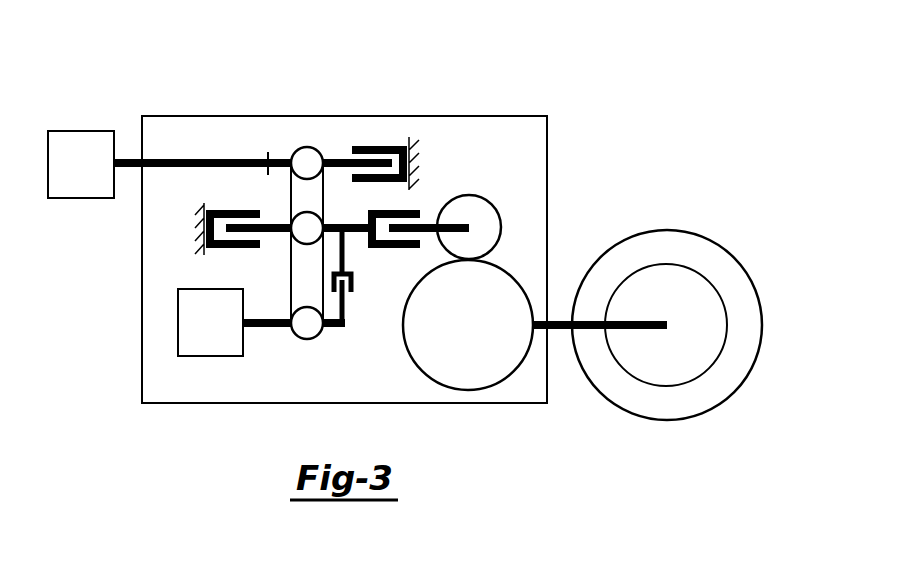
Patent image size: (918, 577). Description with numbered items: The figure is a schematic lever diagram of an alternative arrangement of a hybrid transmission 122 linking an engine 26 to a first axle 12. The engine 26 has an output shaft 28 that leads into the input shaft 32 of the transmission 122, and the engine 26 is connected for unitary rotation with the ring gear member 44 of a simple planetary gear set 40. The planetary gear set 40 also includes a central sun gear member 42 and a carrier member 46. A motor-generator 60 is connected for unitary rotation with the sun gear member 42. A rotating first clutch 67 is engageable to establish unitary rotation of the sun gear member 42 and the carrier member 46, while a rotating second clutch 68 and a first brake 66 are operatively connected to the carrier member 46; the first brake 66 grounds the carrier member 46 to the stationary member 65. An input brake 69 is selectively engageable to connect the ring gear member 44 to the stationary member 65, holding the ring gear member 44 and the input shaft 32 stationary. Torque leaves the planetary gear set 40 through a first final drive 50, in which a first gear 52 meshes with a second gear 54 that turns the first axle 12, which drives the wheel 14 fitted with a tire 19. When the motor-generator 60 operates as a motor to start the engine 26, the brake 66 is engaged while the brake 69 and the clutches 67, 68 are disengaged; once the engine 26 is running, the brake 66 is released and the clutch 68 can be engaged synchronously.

The first axle 12 is at (561, 320).
The wheel 14 is at (665, 263).
The tire 19 is at (762, 325).
The engine 26 is at (89, 180).
The output shaft 28 is at (228, 159).
The input shaft 32 is at (270, 152).
The planetary gear set 40 is at (291, 198).
The sun gear member 42 is at (302, 340).
The ring gear member 44 is at (305, 147).
The carrier member 46 is at (315, 215).
The first final drive 50 is at (514, 257).
The first gear 52 is at (490, 201).
The second gear 54 is at (476, 342).
The motor-generator 60 is at (218, 339).
The stationary member 65 is at (414, 160).
The first brake 66 is at (270, 252).
The first clutch 67 is at (357, 308).
The second clutch 68 is at (427, 252).
The input brake 69 is at (343, 148).
The hybrid transmission 122 is at (472, 116).